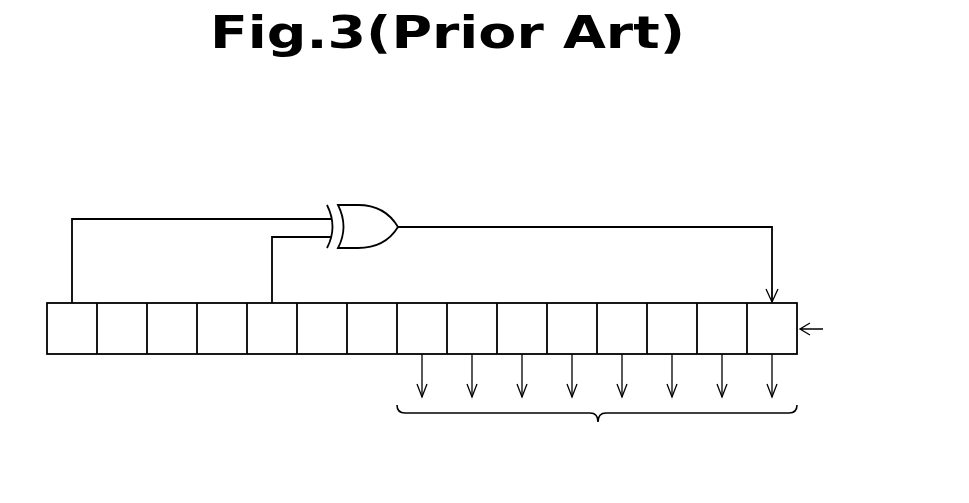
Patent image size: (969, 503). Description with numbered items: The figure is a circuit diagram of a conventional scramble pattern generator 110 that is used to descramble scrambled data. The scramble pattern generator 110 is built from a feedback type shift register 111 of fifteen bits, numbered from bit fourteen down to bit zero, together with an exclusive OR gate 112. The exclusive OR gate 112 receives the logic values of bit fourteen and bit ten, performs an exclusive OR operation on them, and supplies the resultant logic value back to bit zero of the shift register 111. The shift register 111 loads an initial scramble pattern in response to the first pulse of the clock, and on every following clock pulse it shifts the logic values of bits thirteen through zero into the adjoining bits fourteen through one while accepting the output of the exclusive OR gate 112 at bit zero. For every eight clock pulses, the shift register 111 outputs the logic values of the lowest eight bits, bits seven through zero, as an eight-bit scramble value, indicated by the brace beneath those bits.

The scramble pattern generator 110 is at (452, 286).
The feedback type shift register 111 is at (504, 303).
The exclusive OR (EOR) gate 112 is at (358, 204).